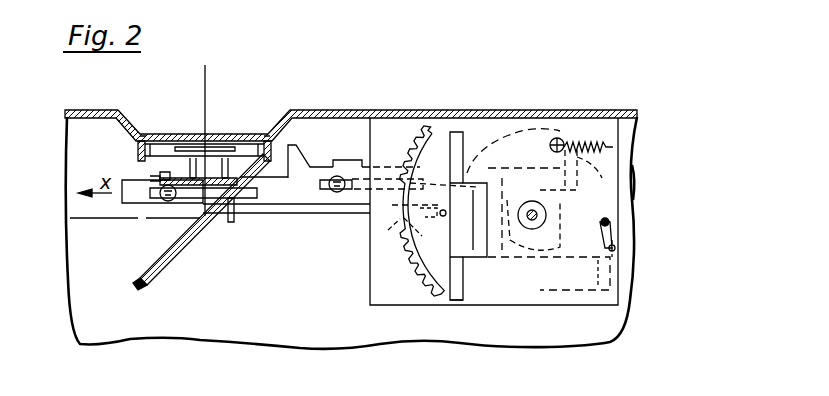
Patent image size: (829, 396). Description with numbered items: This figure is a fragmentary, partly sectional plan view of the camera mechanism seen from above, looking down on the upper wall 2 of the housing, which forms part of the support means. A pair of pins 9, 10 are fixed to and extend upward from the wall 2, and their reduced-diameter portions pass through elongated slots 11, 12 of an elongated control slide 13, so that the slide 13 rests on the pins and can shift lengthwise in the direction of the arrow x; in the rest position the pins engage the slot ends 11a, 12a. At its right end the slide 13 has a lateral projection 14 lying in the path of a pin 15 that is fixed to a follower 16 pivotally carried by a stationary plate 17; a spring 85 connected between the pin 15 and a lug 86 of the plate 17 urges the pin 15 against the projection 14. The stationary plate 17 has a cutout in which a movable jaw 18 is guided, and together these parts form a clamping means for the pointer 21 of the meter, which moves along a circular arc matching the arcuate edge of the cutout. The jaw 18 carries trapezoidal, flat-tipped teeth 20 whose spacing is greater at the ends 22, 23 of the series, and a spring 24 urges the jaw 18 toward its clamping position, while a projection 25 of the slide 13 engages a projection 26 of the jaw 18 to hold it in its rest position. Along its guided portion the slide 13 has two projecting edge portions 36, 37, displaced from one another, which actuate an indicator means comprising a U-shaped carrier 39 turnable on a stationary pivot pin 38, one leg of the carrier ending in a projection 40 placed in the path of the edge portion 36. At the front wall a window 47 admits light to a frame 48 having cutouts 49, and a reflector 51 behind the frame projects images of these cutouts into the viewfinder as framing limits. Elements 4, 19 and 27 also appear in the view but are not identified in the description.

The upper wall 2 is at (126, 322).
The top plate 4 is at (613, 110).
The pin 9 is at (160, 189).
The pin 10 is at (335, 193).
The elongated slot 11 is at (187, 198).
The slot end 11a is at (143, 196).
The elongated slot 12 is at (333, 192).
The slot end 12a is at (327, 189).
The control slide 13 is at (265, 205).
The lateral projection 14 is at (586, 159).
The pin 15 is at (562, 131).
The follower 16 is at (527, 131).
The stationary plate 17 is at (378, 138).
The movable jaw 18 is at (449, 137).
The toothed sector 19 is at (402, 196).
The teeth 20 is at (401, 262).
The pointer 21 is at (420, 215).
The end of series of teeth 22 is at (427, 134).
The end of series of teeth 23 is at (433, 285).
The spring 24 is at (601, 228).
The projection 25 is at (388, 230).
The projection 26 is at (459, 301).
The stop 27 is at (348, 160).
The projecting edge portion 36 is at (166, 177).
The projecting edge portion 37 is at (292, 156).
The stationary pivot pin 38 is at (199, 158).
The carrier 39 is at (215, 160).
The projection 40 is at (156, 179).
The window 47 is at (165, 134).
The frame 48 is at (243, 160).
The cutouts 49 is at (158, 134).
The reflector 51 is at (170, 266).
The spring 85 is at (583, 134).
The lug 86 is at (626, 169).